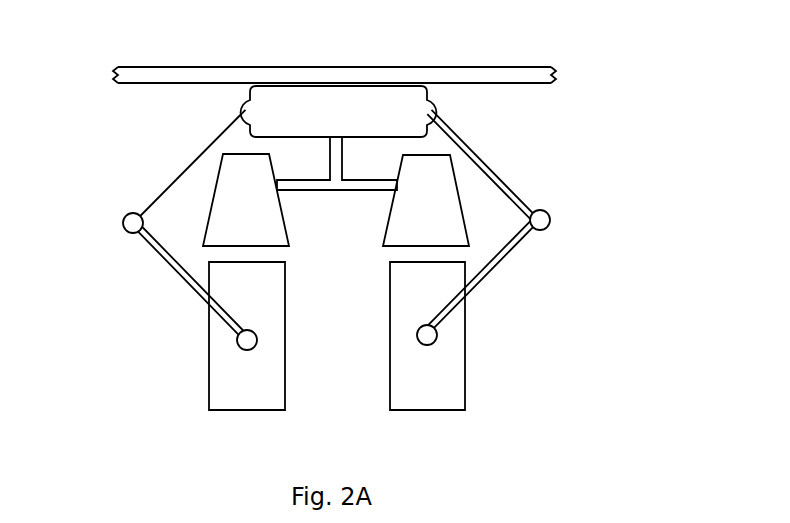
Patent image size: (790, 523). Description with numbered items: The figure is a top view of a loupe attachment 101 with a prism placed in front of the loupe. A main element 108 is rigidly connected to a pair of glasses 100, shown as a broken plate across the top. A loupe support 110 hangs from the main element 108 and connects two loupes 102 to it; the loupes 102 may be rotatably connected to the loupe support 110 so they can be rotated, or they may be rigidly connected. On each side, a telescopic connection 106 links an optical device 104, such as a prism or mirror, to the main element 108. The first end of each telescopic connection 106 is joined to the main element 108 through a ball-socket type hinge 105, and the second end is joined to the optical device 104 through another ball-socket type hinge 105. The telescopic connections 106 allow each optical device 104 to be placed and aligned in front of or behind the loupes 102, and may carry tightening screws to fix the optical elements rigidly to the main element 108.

The glasses 100 is at (153, 70).
The loupe attachment 101 is at (600, 298).
The loupe 102 is at (440, 183).
The optical device 104 is at (448, 390).
The ball-socket type hinge 105 is at (247, 340).
The telescopic connection 106 is at (170, 263).
The main element 108 is at (238, 112).
The loupe support 110 is at (304, 184).